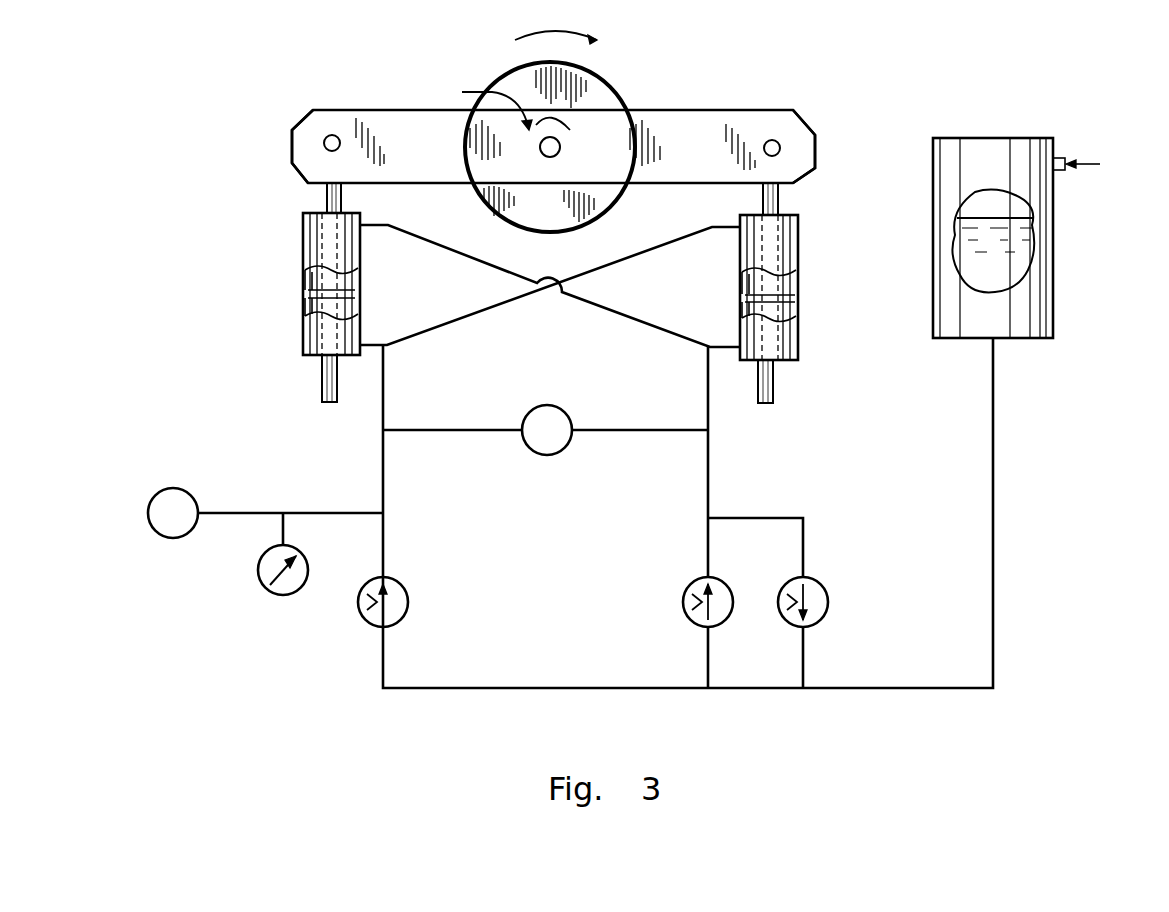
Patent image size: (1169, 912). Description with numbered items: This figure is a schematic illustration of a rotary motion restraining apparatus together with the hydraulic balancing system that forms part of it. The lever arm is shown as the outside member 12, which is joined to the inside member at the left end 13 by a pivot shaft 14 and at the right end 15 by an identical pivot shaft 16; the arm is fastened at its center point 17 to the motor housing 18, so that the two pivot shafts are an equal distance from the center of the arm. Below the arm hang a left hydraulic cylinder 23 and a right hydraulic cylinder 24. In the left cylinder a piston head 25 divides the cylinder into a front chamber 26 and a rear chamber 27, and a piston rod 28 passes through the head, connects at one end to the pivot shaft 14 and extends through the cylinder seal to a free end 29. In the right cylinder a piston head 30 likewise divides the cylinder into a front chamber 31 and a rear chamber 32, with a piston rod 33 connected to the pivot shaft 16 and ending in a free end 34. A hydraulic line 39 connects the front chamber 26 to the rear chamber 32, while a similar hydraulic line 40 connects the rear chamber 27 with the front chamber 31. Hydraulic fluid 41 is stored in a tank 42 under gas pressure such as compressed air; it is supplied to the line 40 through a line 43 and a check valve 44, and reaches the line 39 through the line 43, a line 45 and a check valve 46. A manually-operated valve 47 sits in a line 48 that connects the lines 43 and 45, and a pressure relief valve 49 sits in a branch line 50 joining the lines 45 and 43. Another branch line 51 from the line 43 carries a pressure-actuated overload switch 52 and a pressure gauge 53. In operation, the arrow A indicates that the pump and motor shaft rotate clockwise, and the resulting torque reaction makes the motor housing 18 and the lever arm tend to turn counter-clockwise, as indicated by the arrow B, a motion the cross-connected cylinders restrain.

The outside member 12 is at (697, 118).
The left end 13 is at (290, 144).
The pivot shaft 14 is at (325, 150).
The right end 15 is at (817, 153).
The pivot shaft 16 is at (782, 145).
The center point 17 is at (562, 147).
The motor housing 18 is at (508, 77).
The left hydraulic cylinder 23 is at (302, 236).
The right hydraulic cylinder 24 is at (800, 240).
The piston head 25 is at (362, 280).
The front chamber 26 is at (304, 284).
The rear chamber 27 is at (304, 303).
The piston rod 28 is at (344, 206).
The free end 29 is at (322, 388).
The piston head 30 is at (740, 283).
The front chamber 31 is at (800, 283).
The rear chamber 32 is at (800, 310).
The piston rod 33 is at (782, 205).
The free end 34 is at (775, 385).
The hydraulic line 39 is at (425, 236).
The hydraulic line 40 is at (672, 238).
The hydraulic fluid 41 is at (1010, 260).
The tank 42 is at (985, 137).
The line 43 is at (385, 392).
The check valve 44 is at (366, 620).
The line 45 is at (710, 468).
The check valve 46 is at (683, 602).
The manually-operated valve 47 is at (540, 405).
The line 48 is at (612, 435).
The pressure relief valve 49 is at (825, 585).
The branch line 50 is at (775, 518).
The branch line 51 is at (224, 513).
The pressure-actuated overload switch 52 is at (172, 489).
The pressure gauge 53 is at (262, 580).
The arrow A is at (583, 42).
The arrow B is at (505, 104).